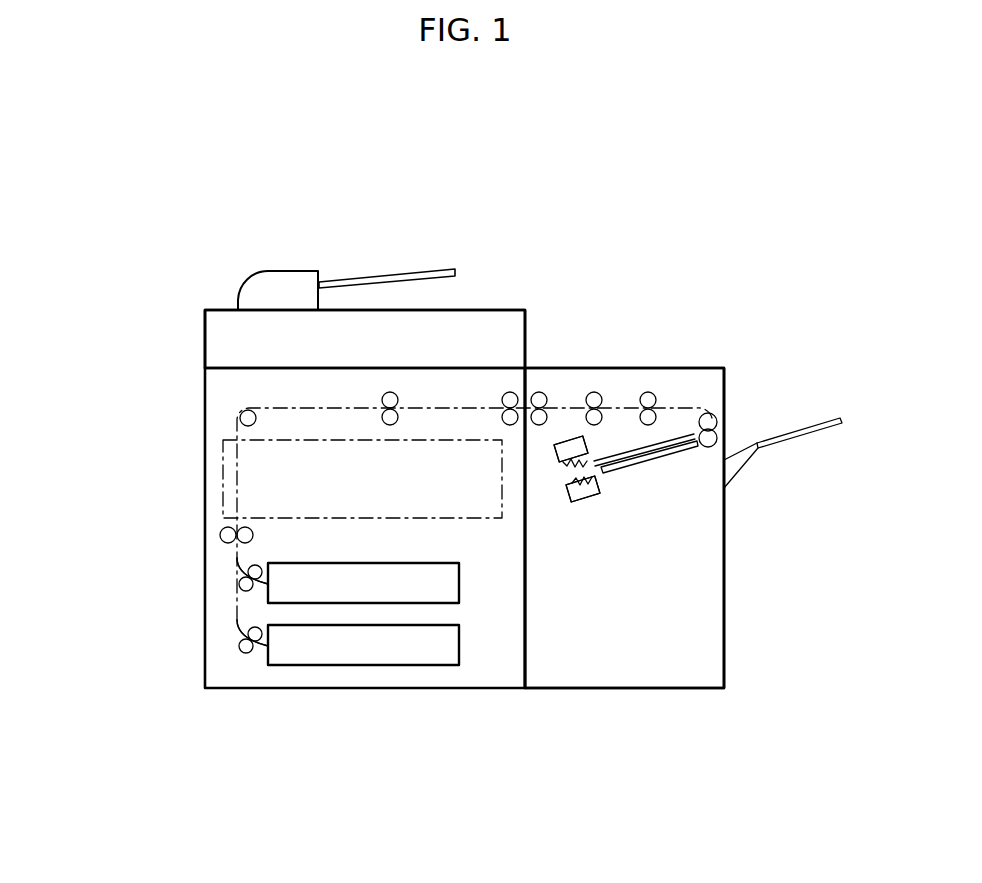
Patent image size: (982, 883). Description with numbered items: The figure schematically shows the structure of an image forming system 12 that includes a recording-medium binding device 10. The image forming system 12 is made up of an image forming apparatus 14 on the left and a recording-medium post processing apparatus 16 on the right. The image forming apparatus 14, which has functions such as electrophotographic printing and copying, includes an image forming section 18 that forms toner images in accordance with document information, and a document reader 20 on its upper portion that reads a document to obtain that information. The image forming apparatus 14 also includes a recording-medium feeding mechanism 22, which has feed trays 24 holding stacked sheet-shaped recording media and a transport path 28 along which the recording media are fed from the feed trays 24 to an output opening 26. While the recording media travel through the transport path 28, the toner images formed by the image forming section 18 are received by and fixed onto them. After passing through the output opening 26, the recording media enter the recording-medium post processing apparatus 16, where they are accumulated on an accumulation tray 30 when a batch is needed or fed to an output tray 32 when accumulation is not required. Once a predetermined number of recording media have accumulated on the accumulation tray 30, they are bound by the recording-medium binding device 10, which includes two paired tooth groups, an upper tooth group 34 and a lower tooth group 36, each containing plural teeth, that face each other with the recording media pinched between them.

The recording-medium binding device 10 is at (563, 497).
The image forming system 12 is at (572, 198).
The image forming apparatus 14 is at (467, 303).
The recording-medium post processing apparatus 16 is at (646, 368).
The image forming section 18 is at (223, 493).
The document reader 20 is at (240, 344).
The recording-medium feeding mechanism 22 is at (224, 597).
The feed trays 24 is at (433, 590).
The output opening 26 is at (510, 392).
The transport path 28 is at (237, 553).
The accumulation tray 30 is at (657, 458).
The output tray 32 is at (798, 437).
The upper tooth group 34 is at (558, 455).
The lower tooth group 36 is at (587, 493).